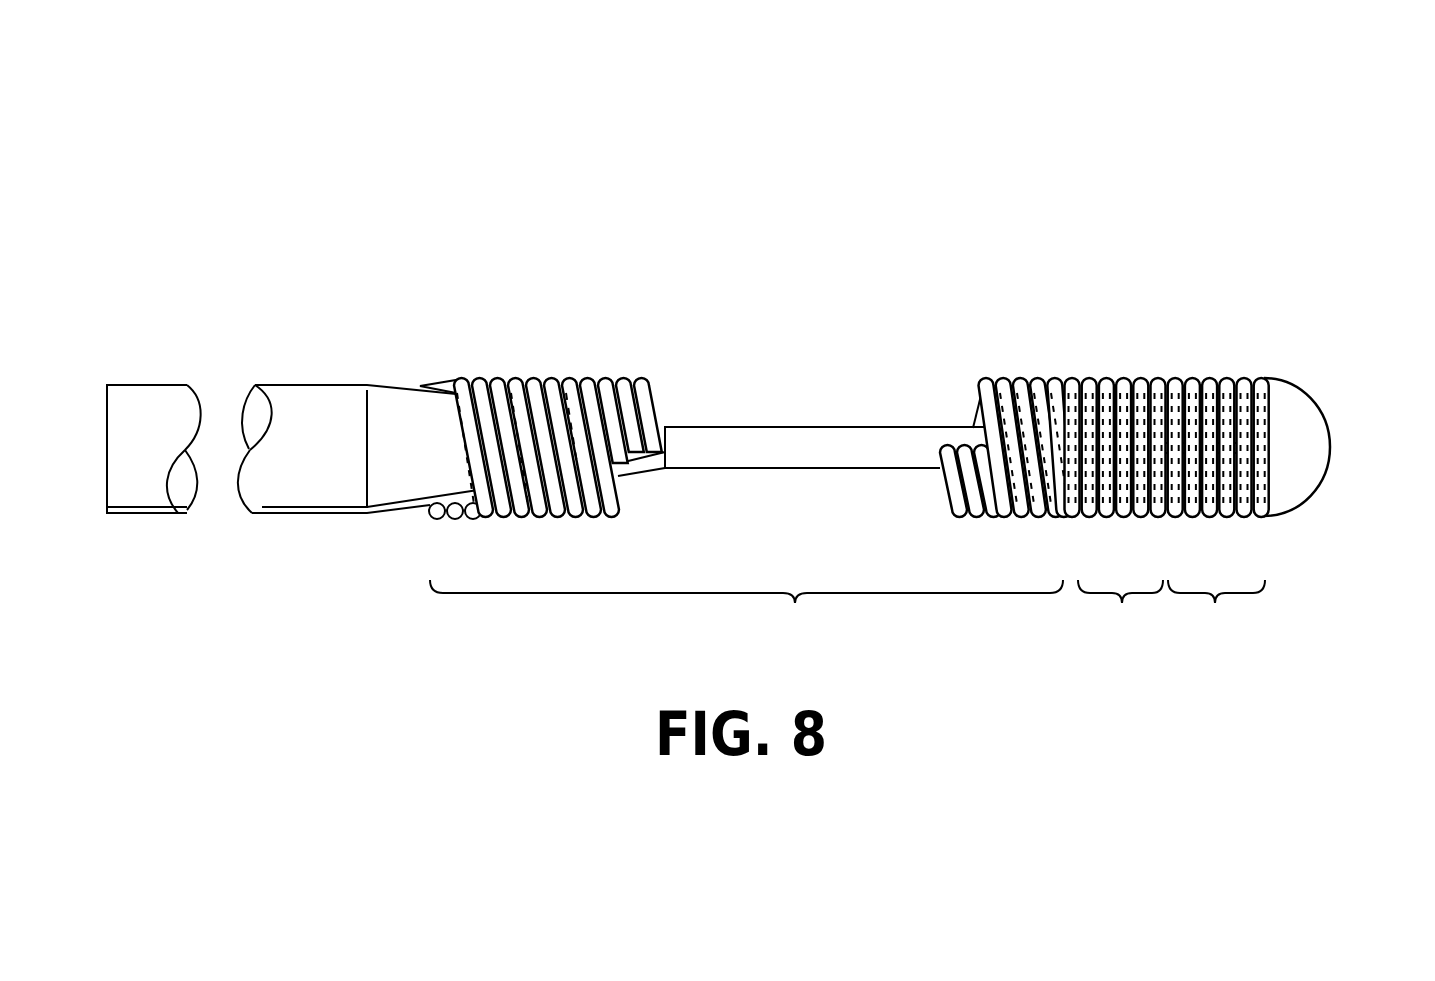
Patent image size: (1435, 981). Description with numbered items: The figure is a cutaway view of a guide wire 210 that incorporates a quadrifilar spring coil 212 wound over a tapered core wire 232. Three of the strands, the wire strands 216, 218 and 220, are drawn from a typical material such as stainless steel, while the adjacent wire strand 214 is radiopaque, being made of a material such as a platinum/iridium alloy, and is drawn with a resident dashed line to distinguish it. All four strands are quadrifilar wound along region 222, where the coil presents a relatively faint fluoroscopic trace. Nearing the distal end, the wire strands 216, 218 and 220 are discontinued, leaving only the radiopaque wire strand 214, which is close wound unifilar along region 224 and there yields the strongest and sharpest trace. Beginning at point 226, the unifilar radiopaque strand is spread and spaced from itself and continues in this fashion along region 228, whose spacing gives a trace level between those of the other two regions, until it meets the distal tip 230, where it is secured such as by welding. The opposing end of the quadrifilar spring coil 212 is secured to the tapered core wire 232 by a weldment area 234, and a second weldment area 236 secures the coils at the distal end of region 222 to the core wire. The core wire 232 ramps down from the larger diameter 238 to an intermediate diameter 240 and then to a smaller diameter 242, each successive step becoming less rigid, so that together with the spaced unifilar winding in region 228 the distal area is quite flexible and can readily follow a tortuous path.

The guide wire 210 is at (1106, 138).
The quadrifilar spring coil 212 is at (612, 335).
The radiopaque wire strand 214 is at (853, 406).
The wire strand 216 is at (698, 406).
The wire strand 218 is at (707, 389).
The wire strand 220 is at (716, 373).
The quadrifilar wound region 222 is at (746, 615).
The close wound unifilar region 224 is at (1120, 614).
The spreading point 226 is at (1195, 417).
The spaced unifilar region 228 is at (1216, 612).
The distal tip 230 is at (1344, 453).
The tapered core wire 232 is at (332, 367).
The weldment area 234 is at (399, 536).
The weldment area 236 is at (1001, 508).
The larger diameter 238 is at (338, 477).
The intermediate diameter 240 is at (801, 479).
The smaller diameter 242 is at (1287, 416).